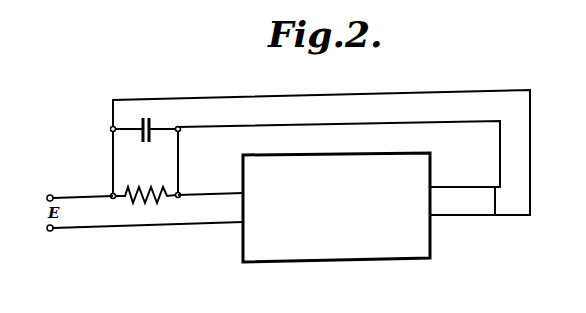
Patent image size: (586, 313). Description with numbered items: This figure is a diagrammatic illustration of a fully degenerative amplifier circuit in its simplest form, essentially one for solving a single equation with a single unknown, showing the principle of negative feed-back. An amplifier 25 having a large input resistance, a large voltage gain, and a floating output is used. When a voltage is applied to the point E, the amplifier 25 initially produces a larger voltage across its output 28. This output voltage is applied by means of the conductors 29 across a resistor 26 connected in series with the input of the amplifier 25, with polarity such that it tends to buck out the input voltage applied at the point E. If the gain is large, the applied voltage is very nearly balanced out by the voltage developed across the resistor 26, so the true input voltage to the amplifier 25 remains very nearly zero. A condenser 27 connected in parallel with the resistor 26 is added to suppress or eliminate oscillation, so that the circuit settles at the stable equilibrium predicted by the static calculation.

The amplifier 25 is at (333, 247).
The resistor 26 is at (146, 187).
The condenser 27 is at (149, 117).
The output 28 is at (496, 186).
The conductors 29 is at (318, 123).